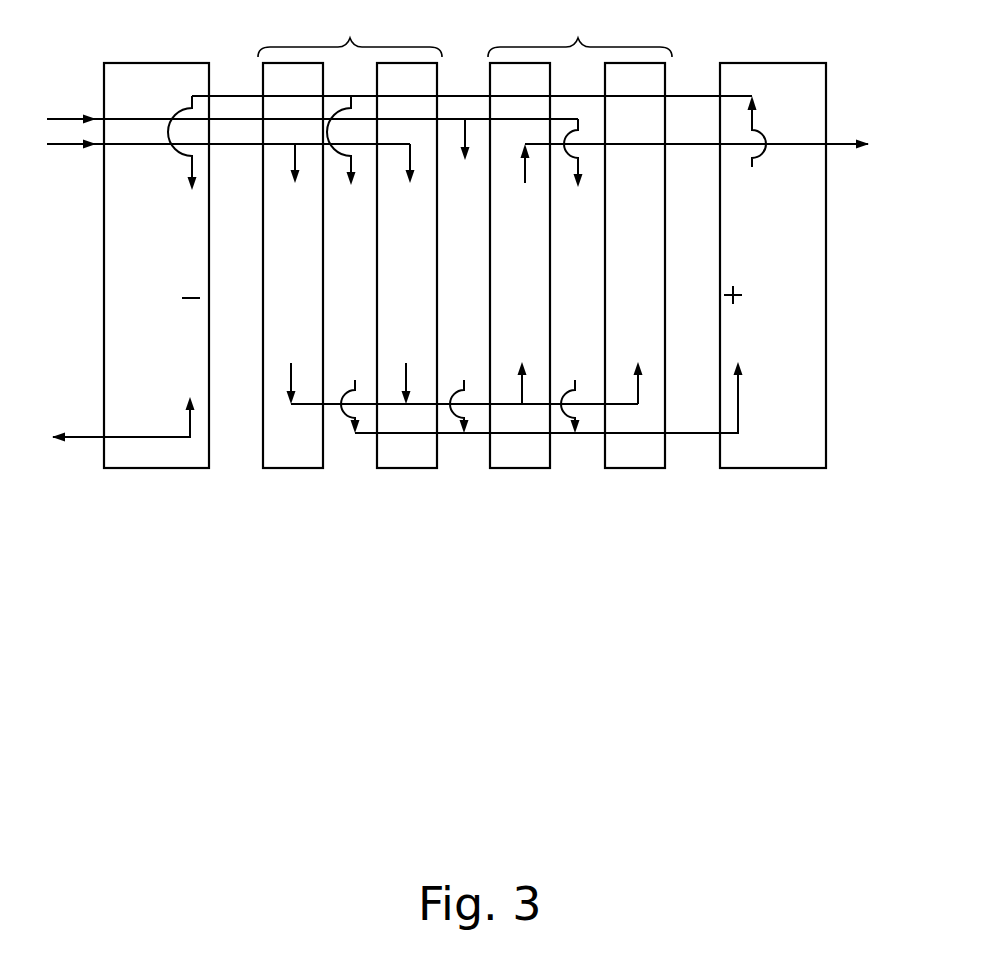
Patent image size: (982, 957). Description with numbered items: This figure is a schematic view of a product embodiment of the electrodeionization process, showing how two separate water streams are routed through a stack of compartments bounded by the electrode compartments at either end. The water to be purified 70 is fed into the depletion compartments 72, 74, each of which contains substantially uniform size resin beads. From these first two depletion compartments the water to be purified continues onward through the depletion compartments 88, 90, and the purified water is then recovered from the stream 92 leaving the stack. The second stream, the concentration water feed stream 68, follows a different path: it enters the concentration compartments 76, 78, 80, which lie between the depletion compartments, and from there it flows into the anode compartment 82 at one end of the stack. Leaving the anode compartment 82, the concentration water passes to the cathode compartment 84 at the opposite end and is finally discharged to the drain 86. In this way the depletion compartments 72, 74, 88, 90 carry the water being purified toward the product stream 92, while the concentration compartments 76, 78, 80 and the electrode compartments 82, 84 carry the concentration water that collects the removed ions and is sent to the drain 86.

The concentration water feed stream 68 is at (62, 117).
The water to be purified 70 is at (63, 146).
The depletion compartment 72 is at (292, 313).
The depletion compartment 74 is at (395, 332).
The concentration compartment 76 is at (370, 248).
The concentration compartment 78 is at (483, 248).
The concentration compartment 80 is at (600, 248).
The anode compartment 82 is at (791, 248).
The cathode compartment 84 is at (170, 248).
The drain 86 is at (83, 438).
The depletion compartment 88 is at (518, 313).
The depletion compartment 90 is at (632, 322).
The stream 92 is at (838, 142).